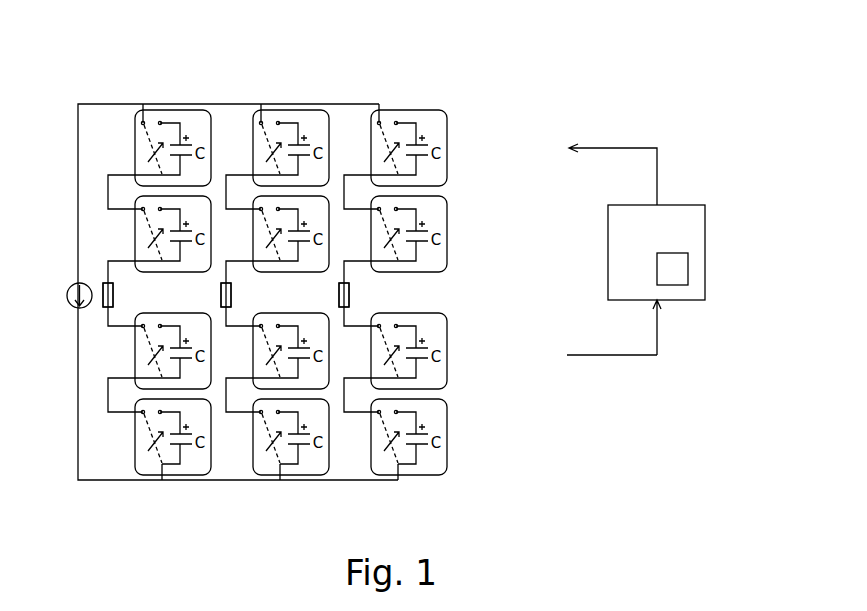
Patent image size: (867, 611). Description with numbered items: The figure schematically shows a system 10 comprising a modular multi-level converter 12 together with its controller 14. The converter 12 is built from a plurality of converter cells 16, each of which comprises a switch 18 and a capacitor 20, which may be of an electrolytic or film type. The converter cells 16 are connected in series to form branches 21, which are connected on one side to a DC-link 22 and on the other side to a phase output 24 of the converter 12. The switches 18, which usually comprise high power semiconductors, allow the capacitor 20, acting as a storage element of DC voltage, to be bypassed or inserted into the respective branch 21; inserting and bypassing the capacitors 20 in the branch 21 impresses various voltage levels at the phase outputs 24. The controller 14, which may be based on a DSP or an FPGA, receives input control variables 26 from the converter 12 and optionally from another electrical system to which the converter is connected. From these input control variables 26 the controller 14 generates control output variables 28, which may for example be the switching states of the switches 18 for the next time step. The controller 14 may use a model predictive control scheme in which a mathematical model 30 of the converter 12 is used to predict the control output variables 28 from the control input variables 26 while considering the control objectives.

The system 10 is at (736, 76).
The modular multi-level converter 12 is at (472, 75).
The controller 14 is at (705, 278).
The converter cell 16 is at (135, 452).
The switch 18 is at (159, 452).
The capacitor 20 is at (181, 455).
The branch 21 is at (95, 441).
The DC-link 22 is at (78, 162).
The phase output 24 is at (127, 298).
The input control variables 26 is at (608, 357).
The control output variables 28 is at (608, 147).
The mathematical model 30 is at (688, 257).